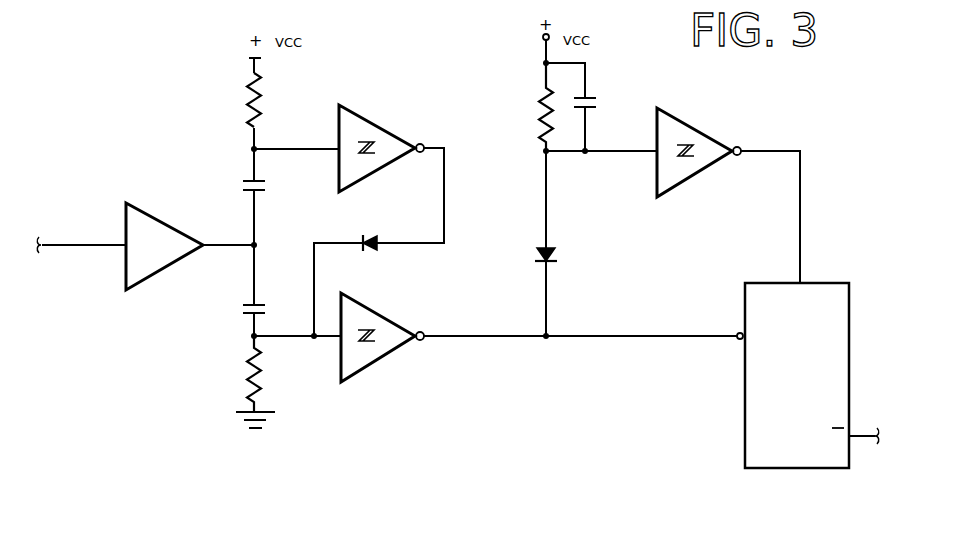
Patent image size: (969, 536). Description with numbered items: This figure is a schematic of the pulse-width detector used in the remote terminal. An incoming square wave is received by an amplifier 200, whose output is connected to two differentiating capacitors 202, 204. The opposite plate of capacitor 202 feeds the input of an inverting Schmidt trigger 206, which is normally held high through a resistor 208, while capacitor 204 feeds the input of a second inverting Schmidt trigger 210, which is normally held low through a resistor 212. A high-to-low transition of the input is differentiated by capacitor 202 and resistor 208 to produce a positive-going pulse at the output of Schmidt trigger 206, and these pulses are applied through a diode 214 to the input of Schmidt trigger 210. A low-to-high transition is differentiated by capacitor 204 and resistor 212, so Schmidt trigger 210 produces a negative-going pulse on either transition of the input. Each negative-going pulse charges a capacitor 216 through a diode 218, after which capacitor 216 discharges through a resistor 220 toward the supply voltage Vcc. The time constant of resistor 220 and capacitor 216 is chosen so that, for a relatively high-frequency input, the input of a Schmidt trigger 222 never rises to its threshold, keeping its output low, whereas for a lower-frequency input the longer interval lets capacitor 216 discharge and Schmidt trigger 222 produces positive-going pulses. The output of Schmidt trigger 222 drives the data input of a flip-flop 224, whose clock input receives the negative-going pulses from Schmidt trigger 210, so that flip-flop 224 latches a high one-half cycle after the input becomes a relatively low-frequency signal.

The amplifier 200 is at (172, 268).
The differentiating capacitor 202 is at (265, 186).
The differentiating capacitor 204 is at (264, 305).
The inverting Schmidt trigger 206 is at (372, 118).
The resistor 208 is at (264, 102).
The second inverting Schmidt trigger 210 is at (362, 370).
The resistor 212 is at (248, 371).
The diode 214 is at (380, 250).
The capacitor 216 is at (597, 100).
The diode 218 is at (558, 253).
The resistor 220 is at (540, 96).
The Schmidt trigger 222 is at (701, 170).
The flip-flop 224 is at (789, 469).